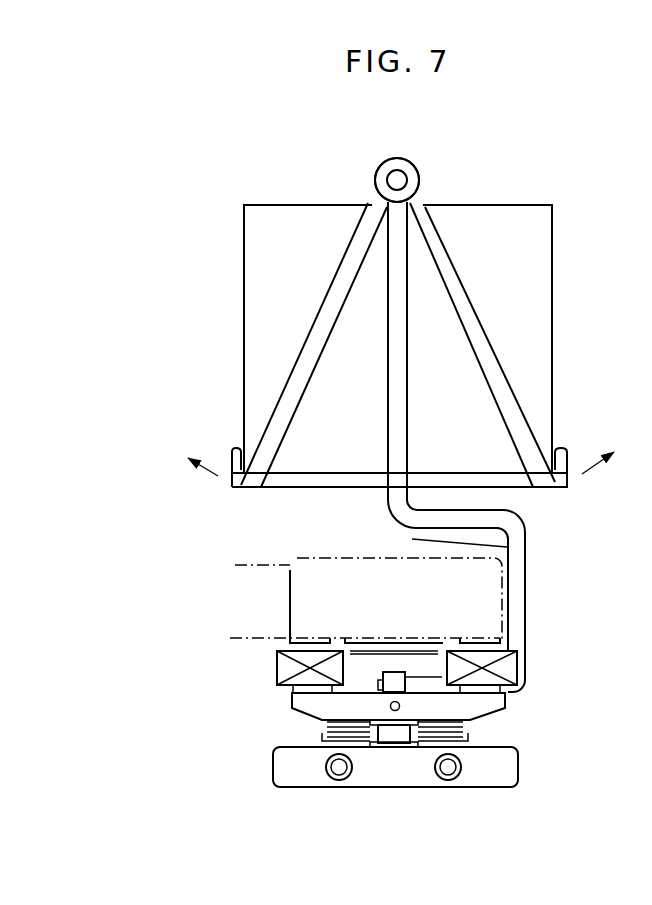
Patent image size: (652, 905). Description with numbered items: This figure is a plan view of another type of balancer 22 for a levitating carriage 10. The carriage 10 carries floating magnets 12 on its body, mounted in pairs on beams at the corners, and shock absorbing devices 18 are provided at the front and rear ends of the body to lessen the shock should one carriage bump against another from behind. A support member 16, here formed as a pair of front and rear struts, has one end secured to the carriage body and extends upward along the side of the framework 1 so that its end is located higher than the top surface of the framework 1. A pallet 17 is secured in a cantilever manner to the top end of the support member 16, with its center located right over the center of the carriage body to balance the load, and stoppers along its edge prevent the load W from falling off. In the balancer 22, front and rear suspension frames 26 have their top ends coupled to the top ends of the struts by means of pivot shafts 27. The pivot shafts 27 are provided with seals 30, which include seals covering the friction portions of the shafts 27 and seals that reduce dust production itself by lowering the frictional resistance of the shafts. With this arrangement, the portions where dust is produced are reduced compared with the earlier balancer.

The framework 1 is at (295, 562).
The carriage 10 is at (270, 772).
The floating magnets 12 is at (517, 666).
The support member 16 is at (514, 598).
The pallet 17 is at (498, 480).
The shock absorbing devices 18 is at (339, 767).
The balancer 22 is at (372, 183).
The suspension frames 26 is at (490, 362).
The pivot shafts 27 is at (405, 177).
The seals 30 is at (396, 178).
The load W is at (543, 237).